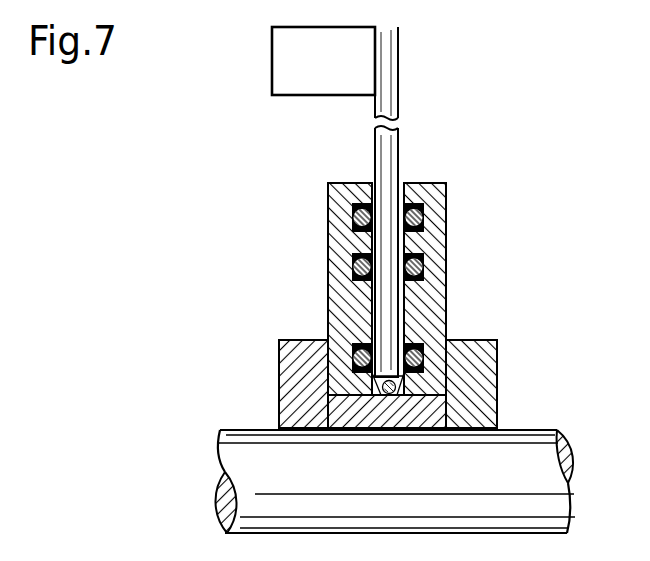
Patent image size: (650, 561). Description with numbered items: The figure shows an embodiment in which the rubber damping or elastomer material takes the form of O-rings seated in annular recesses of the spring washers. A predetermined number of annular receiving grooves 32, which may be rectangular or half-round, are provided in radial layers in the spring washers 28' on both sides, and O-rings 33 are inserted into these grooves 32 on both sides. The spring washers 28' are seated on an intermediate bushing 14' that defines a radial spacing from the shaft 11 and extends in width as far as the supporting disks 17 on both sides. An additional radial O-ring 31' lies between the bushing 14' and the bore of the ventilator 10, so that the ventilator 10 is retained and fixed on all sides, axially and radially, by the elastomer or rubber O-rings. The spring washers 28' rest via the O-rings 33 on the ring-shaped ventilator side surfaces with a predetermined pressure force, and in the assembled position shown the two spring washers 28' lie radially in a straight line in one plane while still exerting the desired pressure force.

The ventilator 10 is at (398, 150).
The spring washers 28' is at (379, 269).
The O-rings 33 is at (327, 200).
The annular receiving grooves 32 is at (327, 231).
The radial O-ring 31' is at (470, 369).
The intermediate bushing 14' is at (319, 408).
The supporting disks 17 is at (281, 373).
The shaft 11 is at (528, 455).